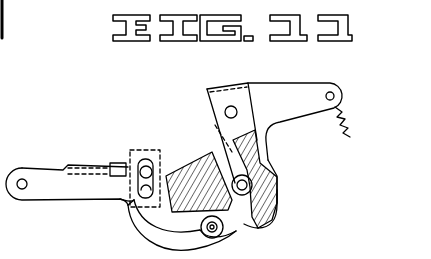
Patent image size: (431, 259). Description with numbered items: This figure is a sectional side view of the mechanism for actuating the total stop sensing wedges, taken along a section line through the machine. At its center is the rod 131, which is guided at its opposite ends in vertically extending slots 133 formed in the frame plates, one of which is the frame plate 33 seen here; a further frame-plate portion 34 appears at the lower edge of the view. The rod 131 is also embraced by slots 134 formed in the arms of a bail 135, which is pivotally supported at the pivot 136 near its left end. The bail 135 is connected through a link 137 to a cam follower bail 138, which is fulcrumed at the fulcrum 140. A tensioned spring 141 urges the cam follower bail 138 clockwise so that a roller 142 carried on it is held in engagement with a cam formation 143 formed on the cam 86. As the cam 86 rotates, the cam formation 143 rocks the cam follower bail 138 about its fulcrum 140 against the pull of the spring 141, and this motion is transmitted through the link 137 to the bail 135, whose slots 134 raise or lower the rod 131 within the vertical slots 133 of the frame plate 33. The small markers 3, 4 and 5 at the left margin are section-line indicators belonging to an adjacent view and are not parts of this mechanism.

The section line indicator 3 is at (0, 82).
The section line indicator 4 is at (0, 57).
The section line indicator 5 is at (2, 117).
The frame plate 33 is at (127, 206).
The lever body 34 is at (108, 256).
The cam 86 is at (278, 203).
The rod 131 is at (136, 164).
The vertically extending slot 133 is at (145, 158).
The slot 134 is at (164, 160).
The bail 135 is at (53, 200).
The pivot 136 is at (23, 178).
The link 137 is at (233, 229).
The cam follower bail 138 is at (262, 93).
The fulcrum 140 is at (229, 106).
The tensioned spring 141 is at (347, 116).
The roller 142 is at (275, 156).
The cam formation 143 is at (262, 229).